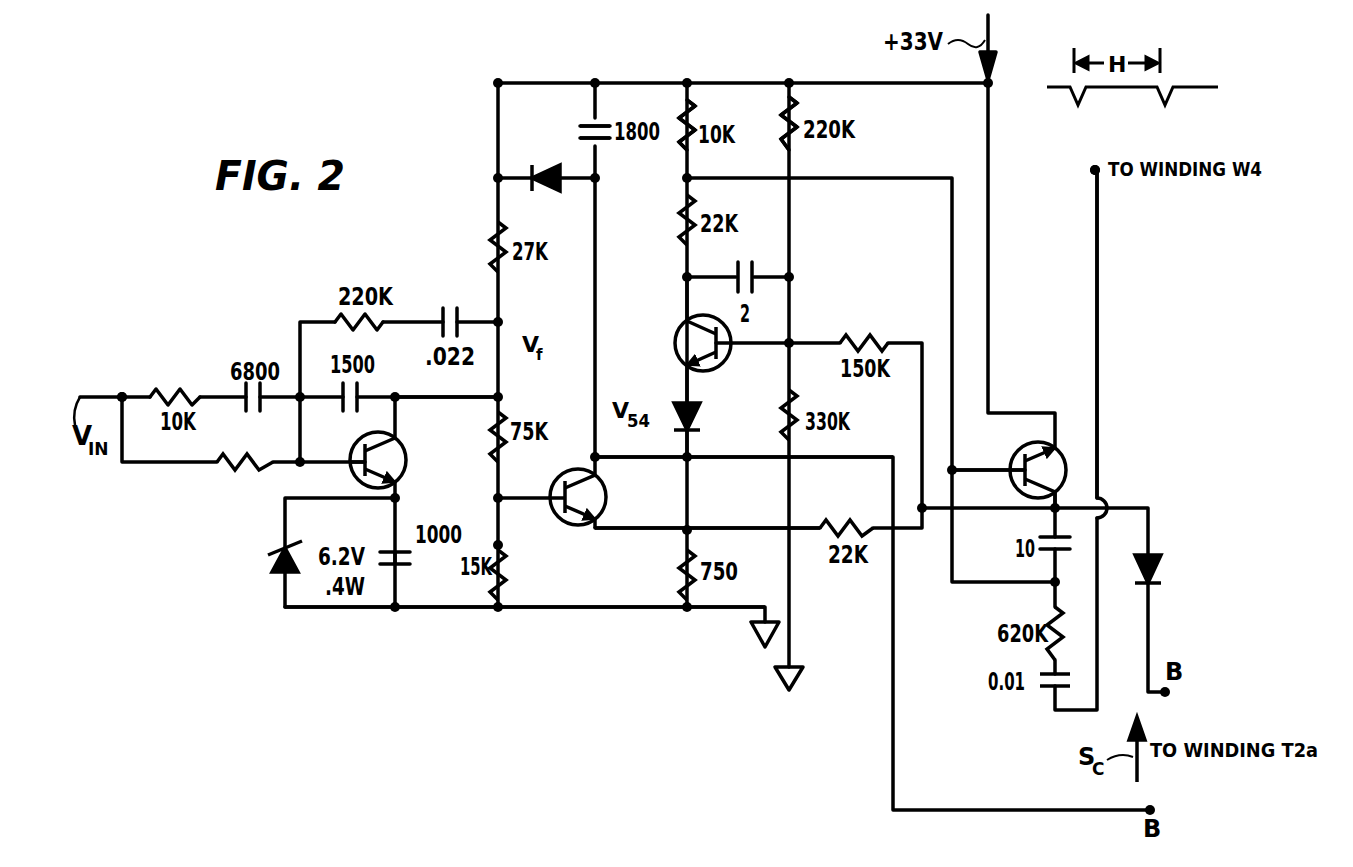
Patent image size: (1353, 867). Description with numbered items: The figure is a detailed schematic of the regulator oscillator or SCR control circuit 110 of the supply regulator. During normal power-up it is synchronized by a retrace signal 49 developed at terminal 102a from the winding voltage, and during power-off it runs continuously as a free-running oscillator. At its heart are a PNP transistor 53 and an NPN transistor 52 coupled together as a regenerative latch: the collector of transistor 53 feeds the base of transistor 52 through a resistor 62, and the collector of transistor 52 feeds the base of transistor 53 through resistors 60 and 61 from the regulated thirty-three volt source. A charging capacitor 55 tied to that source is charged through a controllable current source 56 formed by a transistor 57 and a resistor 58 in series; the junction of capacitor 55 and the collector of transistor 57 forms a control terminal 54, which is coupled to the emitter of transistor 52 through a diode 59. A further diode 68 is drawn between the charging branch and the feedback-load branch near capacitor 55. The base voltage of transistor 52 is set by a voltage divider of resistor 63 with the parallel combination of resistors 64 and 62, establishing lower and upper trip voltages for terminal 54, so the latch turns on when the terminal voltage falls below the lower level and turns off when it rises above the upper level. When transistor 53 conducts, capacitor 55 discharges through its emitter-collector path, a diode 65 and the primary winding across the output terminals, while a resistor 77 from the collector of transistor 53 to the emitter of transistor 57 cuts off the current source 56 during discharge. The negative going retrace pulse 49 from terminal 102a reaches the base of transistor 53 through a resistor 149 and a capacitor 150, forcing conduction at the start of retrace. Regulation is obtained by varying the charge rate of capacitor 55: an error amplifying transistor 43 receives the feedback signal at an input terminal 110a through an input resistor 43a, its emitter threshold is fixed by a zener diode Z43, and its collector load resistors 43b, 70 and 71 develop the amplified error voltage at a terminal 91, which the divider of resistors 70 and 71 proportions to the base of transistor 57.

The input terminal 110a is at (122, 396).
The input resistor 43a is at (225, 466).
The error amplifying transistor 43 is at (404, 456).
The zener diode Z43 is at (273, 563).
The collector load resistor 43b is at (493, 247).
The charging capacitor 55 is at (583, 137).
The diode 68 is at (550, 190).
The resistor 60 is at (680, 115).
The resistor 61 is at (679, 225).
The resistor 63 is at (782, 106).
The NPN transistor 52 is at (645, 336).
The diode 59 is at (700, 413).
The resistor 62 is at (856, 335).
The resistor 64 is at (793, 389).
The resistor 70 is at (493, 445).
The resistor 71 is at (503, 547).
The terminal 91 is at (502, 395).
The control terminal 54 is at (613, 428).
The transistor 57 is at (640, 516).
The controllable current source 56 is at (710, 516).
The resistor 58 is at (685, 560).
The resistor 77 is at (843, 522).
The PNP transistor 53 is at (1090, 483).
The resistor 149 is at (1053, 604).
The capacitor 150 is at (1050, 686).
The diode 65 is at (1150, 556).
The terminal 102a is at (1095, 170).
The retrace signal 49 is at (1095, 207).
The regulator oscillator 110 is at (625, 674).